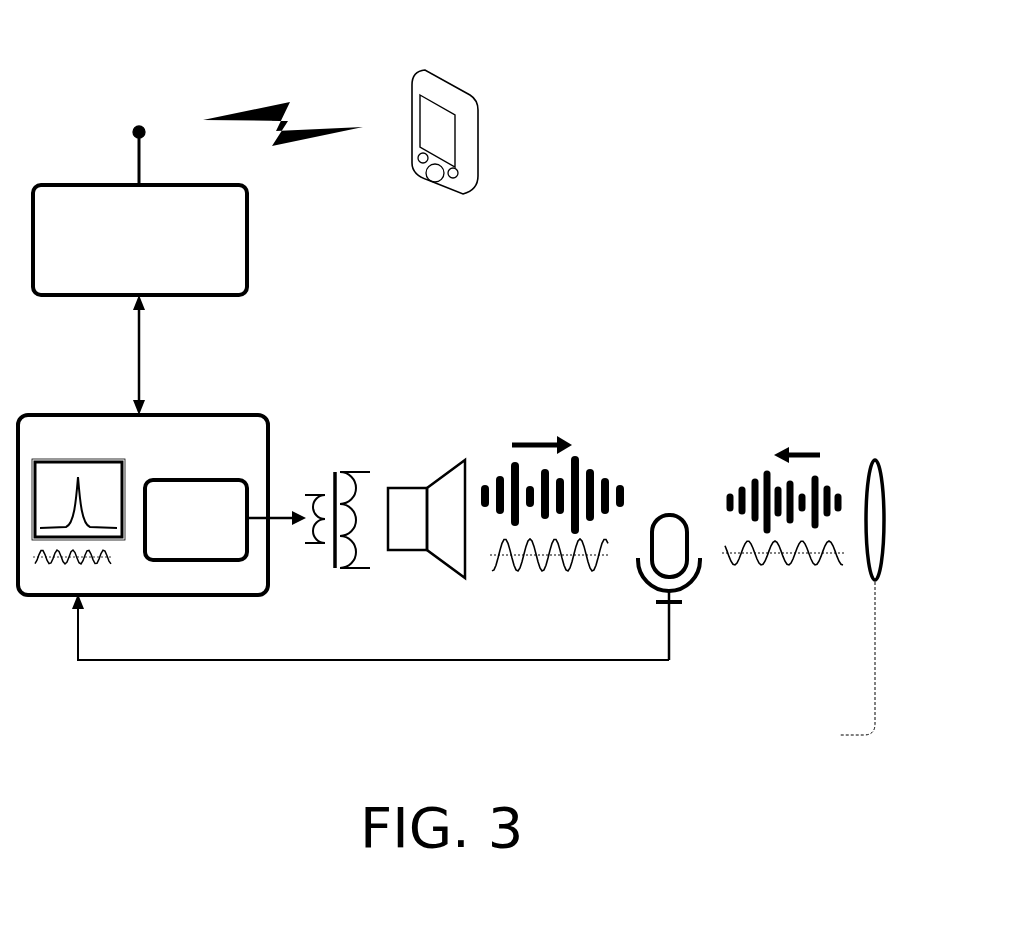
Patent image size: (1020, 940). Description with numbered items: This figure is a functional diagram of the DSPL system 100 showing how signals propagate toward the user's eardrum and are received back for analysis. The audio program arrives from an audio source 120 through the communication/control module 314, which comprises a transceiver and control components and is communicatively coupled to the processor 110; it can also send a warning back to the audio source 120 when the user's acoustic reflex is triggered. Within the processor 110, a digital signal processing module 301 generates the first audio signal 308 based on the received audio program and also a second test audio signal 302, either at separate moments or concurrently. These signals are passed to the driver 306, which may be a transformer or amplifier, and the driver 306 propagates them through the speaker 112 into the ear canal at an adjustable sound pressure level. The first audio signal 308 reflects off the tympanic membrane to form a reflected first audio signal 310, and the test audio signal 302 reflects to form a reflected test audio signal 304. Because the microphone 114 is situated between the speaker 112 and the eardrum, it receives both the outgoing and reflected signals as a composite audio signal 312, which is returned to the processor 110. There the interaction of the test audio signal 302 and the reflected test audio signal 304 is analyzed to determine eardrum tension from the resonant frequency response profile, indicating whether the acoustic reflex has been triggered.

The DSPL system 100 is at (728, 52).
The audio source 120 is at (475, 148).
The communication/control module 314 is at (140, 270).
The processor 110 is at (143, 505).
The digital signal processing (DSP) module 301 is at (225, 520).
The driver 306 is at (361, 472).
The speaker 112 is at (437, 478).
The first audio signal 308 is at (590, 468).
The test audio signal 302 is at (568, 566).
The microphone 114 is at (690, 518).
The reflected test audio signal 304 is at (765, 565).
The reflected first audio signal 310 is at (833, 492).
The composite audio signal 312 is at (370, 646).